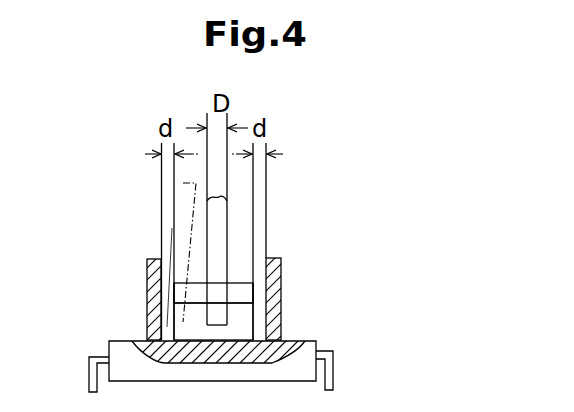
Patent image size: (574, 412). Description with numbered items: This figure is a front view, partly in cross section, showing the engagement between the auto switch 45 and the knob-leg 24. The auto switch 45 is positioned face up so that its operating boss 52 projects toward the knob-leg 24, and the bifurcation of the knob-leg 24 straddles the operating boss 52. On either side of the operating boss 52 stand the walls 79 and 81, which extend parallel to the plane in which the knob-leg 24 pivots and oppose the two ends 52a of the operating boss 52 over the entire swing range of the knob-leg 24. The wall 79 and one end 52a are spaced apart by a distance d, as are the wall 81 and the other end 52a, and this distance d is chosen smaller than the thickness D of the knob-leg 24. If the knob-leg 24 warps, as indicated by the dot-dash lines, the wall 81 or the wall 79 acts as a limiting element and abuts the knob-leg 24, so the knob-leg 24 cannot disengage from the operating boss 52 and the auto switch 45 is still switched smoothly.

The knob-leg 24 is at (175, 203).
The operating boss 52 is at (243, 280).
The end of operating boss 52a is at (172, 298).
The wall 79 is at (281, 270).
The wall 81 is at (147, 265).
The auto switch 45 is at (302, 338).